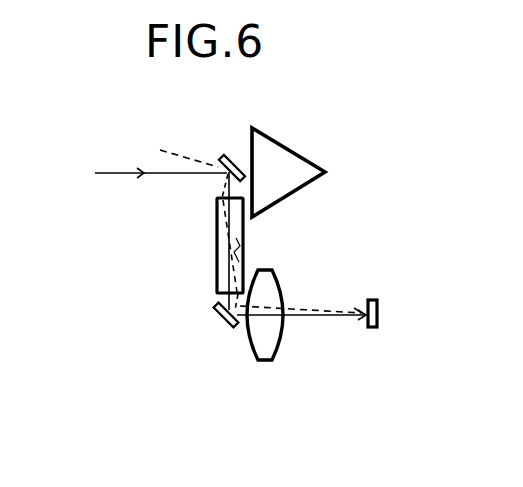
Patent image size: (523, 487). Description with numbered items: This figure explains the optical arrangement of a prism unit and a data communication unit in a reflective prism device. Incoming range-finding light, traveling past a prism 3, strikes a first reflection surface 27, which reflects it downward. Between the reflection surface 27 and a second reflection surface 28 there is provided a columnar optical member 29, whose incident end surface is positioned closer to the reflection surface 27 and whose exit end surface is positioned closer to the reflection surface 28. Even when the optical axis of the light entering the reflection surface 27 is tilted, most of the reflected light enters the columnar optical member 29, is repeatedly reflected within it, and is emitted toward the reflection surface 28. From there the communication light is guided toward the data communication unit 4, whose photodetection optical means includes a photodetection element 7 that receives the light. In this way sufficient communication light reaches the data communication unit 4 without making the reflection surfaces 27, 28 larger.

The prism 3 is at (298, 150).
The reflection surface 27 is at (232, 157).
The columnar optical member 29 is at (217, 247).
The reflection surface 28 is at (222, 317).
The data communication unit 4 is at (388, 367).
The photodetection element 7 is at (375, 298).